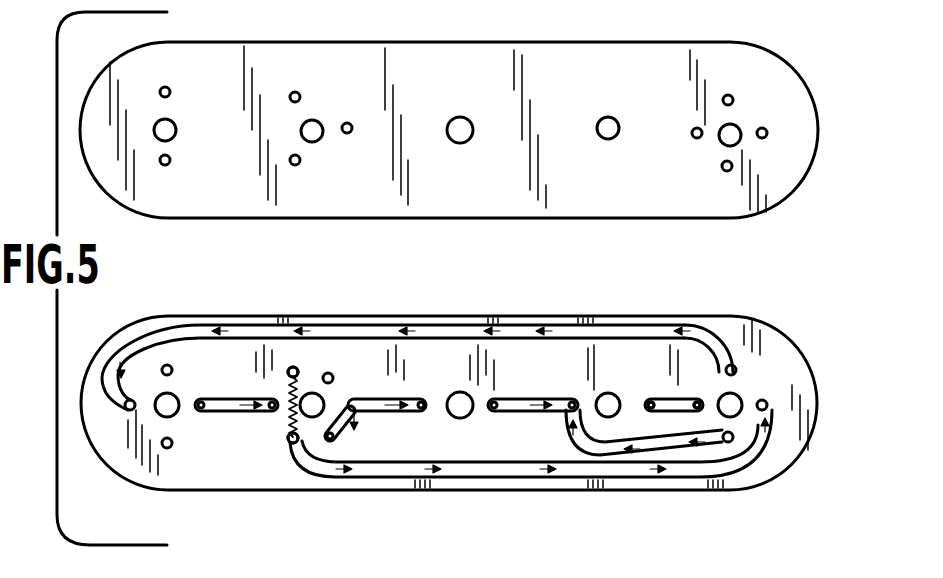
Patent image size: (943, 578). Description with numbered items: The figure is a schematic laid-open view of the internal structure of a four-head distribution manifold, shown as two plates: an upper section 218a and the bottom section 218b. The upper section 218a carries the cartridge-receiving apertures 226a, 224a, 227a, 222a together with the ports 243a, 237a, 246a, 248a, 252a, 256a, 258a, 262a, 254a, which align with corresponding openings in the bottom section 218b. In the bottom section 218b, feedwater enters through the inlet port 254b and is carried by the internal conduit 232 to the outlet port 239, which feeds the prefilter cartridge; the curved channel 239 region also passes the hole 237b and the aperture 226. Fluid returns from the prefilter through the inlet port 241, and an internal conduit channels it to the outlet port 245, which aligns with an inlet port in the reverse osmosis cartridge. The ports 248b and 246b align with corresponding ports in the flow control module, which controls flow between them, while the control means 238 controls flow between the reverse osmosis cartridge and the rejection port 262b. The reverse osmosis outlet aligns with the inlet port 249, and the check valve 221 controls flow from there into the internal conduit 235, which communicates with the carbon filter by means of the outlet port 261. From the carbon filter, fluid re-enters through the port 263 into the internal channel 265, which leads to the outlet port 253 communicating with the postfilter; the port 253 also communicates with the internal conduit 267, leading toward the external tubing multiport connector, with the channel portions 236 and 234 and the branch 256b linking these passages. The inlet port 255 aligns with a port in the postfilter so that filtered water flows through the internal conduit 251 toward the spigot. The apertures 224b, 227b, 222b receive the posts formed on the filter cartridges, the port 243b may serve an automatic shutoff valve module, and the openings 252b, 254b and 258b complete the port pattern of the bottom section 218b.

The upper plate 218a is at (190, 188).
The port 243a is at (160, 90).
The aperture 226a is at (174, 127).
The hole 237a is at (163, 163).
The port 246a is at (297, 94).
The aperture 224a is at (318, 128).
The port 248a is at (295, 165).
The hole 252a is at (347, 133).
The aperture 227a is at (466, 141).
The aperture 222a is at (610, 126).
The S port hole 256a is at (694, 130).
The T port hole 258a is at (727, 97).
The rejection port 262a is at (766, 136).
The inlet port 254a is at (727, 170).
The bottom section of the distribution manifold 218b is at (148, 468).
The upper flow channel 236 is at (247, 338).
The outlet port 261 is at (432, 338).
The internal channel 265 is at (500, 330).
The S port / channel branch 256b is at (696, 400).
The inlet port 254b is at (734, 366).
The internal conduit 232 is at (123, 398).
The outlet port 239 is at (127, 411).
The hole 237b is at (165, 366).
The aperture 226 is at (175, 395).
The port 243b is at (168, 448).
The inlet port 241 is at (199, 410).
The outlet port 245 is at (282, 425).
The port 248b is at (294, 367).
The control means 238 is at (292, 444).
The aperture 224b is at (315, 392).
The hole 252b is at (346, 408).
The internal conduit 235 is at (397, 413).
The inlet port 249 is at (367, 425).
The check valve 221 is at (438, 464).
The port 246b is at (294, 451).
The port 263 is at (533, 464).
The rejection port 262b is at (763, 412).
The aperture 227b is at (461, 419).
The outlet port 253 is at (575, 399).
The intermediate channel 234 is at (562, 456).
The internal conduit 267 is at (682, 446).
The T port hole 258b is at (731, 442).
The aperture 222b is at (609, 392).
The internal conduit 251 is at (670, 398).
The inlet port 255 is at (650, 410).